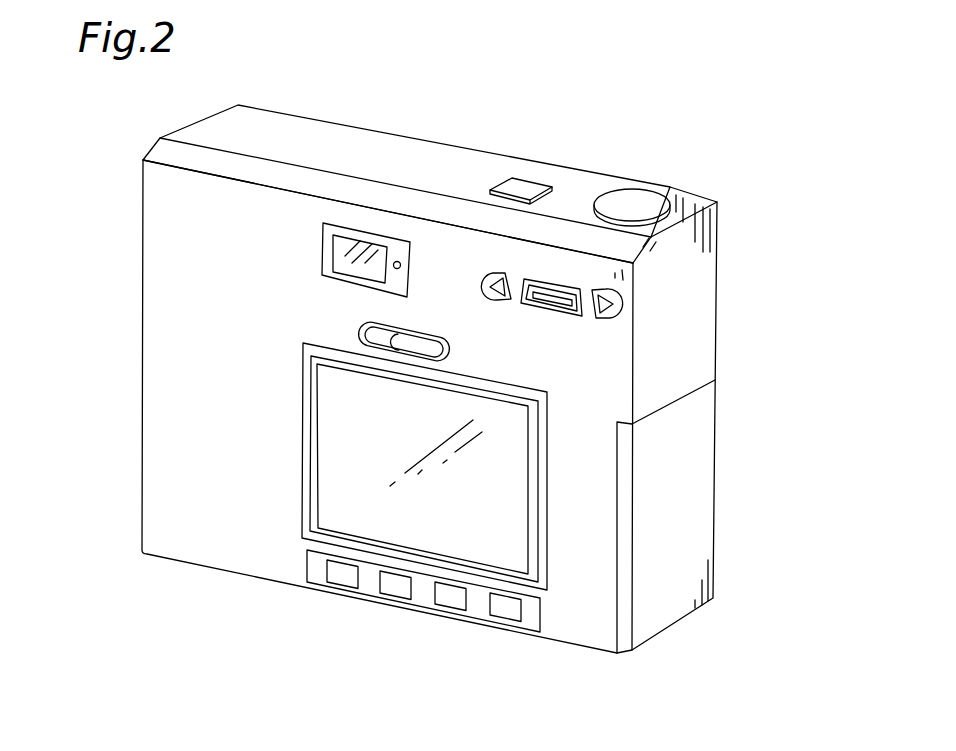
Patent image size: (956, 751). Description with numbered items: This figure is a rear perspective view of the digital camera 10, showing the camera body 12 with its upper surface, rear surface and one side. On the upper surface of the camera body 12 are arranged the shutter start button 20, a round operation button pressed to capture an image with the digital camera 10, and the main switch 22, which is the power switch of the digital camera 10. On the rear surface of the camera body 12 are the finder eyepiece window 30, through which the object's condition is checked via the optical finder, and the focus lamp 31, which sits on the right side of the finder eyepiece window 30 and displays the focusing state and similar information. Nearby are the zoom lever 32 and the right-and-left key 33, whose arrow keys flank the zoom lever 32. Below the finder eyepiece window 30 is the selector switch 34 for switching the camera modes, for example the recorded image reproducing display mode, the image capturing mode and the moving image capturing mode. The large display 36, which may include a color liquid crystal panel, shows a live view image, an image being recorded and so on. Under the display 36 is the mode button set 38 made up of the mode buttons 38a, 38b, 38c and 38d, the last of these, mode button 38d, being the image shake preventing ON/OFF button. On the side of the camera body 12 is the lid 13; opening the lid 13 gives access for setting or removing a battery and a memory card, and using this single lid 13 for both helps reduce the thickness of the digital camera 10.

The digital camera 10 is at (718, 140).
The camera body 12 is at (328, 122).
The lid 13 is at (683, 466).
The shutter start button 20 is at (632, 203).
The main switch 22 is at (520, 187).
The finder eyepiece window 30 is at (337, 263).
The focus lamp 31 is at (402, 265).
The zoom lever 32 is at (540, 310).
The right-and-left key 33 is at (602, 288).
The selector switch 34 is at (360, 328).
The display 36 is at (332, 413).
The mode button set 38 is at (305, 575).
The mode button 38a is at (340, 579).
The mode button 38b is at (395, 591).
The mode button 38c is at (448, 601).
The mode button 38d is at (504, 614).